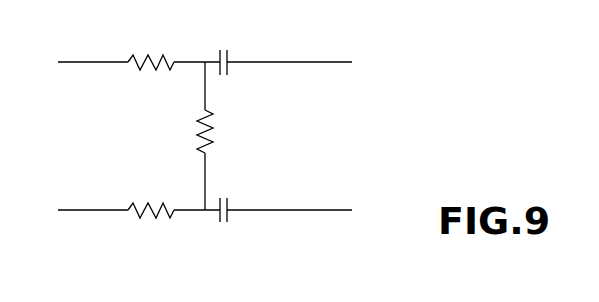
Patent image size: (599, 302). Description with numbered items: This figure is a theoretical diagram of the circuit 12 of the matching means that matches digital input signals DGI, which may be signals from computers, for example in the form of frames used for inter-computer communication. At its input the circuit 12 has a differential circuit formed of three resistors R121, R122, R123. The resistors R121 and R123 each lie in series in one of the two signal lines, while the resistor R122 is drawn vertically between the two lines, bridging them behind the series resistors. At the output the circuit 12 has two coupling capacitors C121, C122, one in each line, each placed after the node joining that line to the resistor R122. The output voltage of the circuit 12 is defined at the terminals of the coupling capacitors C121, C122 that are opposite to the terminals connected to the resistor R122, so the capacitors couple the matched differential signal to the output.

The circuit 12 is at (357, 123).
The resistor R121 is at (134, 53).
The coupling capacitor C121 is at (229, 51).
The resistor R122 is at (211, 140).
The resistor R123 is at (141, 224).
The coupling capacitor C122 is at (230, 213).